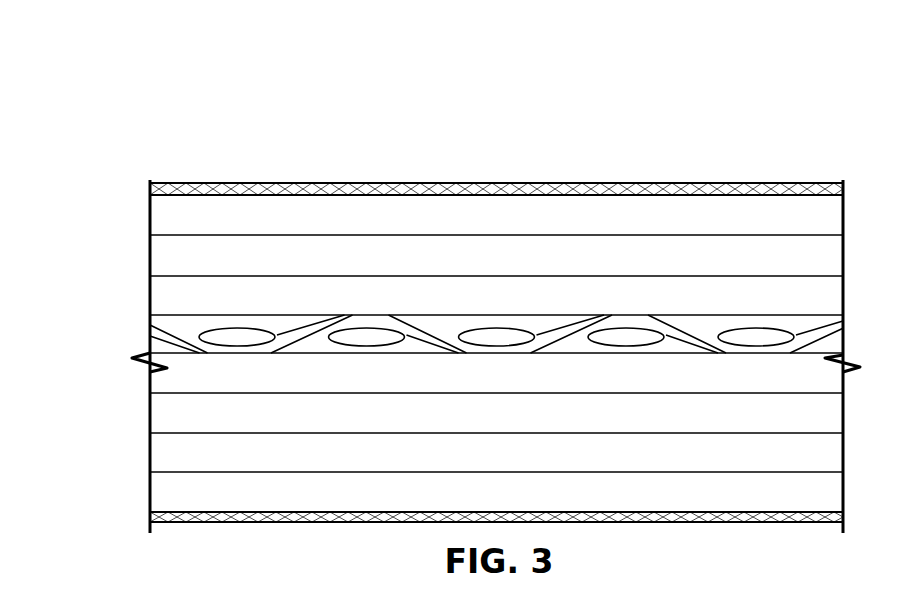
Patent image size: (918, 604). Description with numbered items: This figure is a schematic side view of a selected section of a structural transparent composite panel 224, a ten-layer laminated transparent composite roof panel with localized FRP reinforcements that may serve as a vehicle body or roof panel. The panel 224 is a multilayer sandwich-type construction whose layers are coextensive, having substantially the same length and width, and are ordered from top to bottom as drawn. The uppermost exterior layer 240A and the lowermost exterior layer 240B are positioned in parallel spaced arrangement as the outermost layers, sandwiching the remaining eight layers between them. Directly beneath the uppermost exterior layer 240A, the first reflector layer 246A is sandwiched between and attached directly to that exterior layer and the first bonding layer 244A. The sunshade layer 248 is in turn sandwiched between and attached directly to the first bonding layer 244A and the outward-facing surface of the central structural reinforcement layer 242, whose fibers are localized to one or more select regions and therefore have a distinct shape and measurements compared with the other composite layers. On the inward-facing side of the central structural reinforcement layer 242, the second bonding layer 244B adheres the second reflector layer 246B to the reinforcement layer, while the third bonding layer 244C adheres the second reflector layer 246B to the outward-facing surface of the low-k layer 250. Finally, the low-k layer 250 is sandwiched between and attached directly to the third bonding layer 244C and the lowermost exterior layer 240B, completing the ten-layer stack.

The structural transparent composite panel 224 is at (210, 97).
The uppermost exterior layer 240A is at (150, 189).
The first reflector layer 246A is at (150, 208).
The first bonding layer 244A is at (150, 248).
The sunshade layer 248 is at (150, 288).
The central structural reinforcement layer 242 is at (150, 328).
The second bonding layer 244B is at (150, 378).
The second reflector layer 246B is at (150, 406).
The third bonding layer 244C is at (150, 446).
The low-k layer 250 is at (150, 484).
The lowermost exterior layer 240B is at (150, 517).